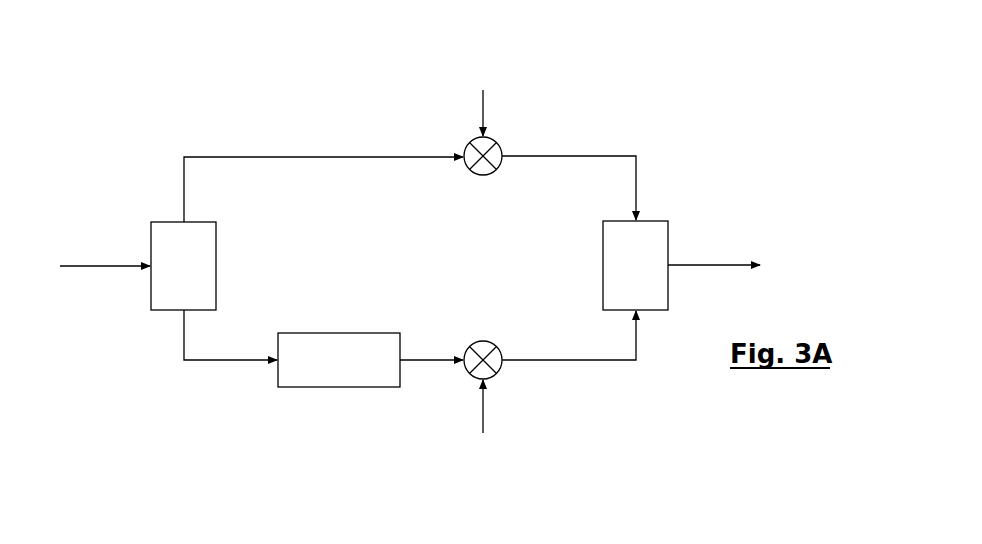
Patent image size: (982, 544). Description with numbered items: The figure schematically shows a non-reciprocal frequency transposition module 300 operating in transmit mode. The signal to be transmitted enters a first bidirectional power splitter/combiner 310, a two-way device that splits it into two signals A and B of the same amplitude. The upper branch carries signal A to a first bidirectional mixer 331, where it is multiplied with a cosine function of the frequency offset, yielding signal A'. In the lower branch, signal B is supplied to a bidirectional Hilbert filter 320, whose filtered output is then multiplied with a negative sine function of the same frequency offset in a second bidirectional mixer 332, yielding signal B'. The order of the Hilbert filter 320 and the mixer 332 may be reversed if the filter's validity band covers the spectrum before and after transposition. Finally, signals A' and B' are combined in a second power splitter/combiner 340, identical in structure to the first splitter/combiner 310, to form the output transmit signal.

The frequency transposition module 300 is at (289, 112).
The first bidirectional power splitter/combiner 310 is at (165, 222).
The bidirectional Hilbert filter 320 is at (313, 387).
The first bidirectional mixer 331 is at (498, 138).
The second bidirectional mixer 332 is at (500, 372).
The second power splitter/combiner 340 is at (654, 221).